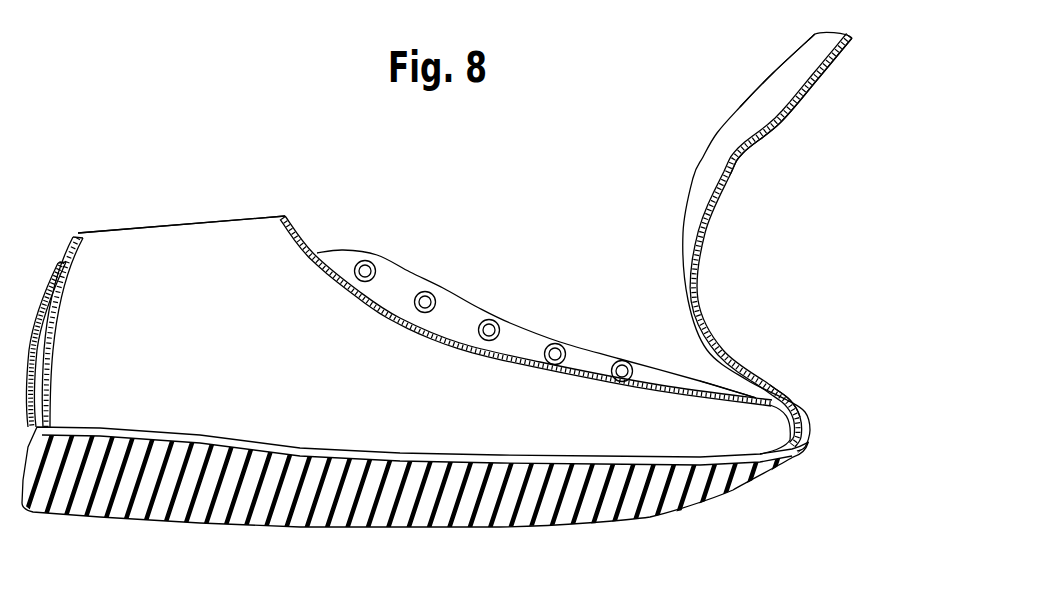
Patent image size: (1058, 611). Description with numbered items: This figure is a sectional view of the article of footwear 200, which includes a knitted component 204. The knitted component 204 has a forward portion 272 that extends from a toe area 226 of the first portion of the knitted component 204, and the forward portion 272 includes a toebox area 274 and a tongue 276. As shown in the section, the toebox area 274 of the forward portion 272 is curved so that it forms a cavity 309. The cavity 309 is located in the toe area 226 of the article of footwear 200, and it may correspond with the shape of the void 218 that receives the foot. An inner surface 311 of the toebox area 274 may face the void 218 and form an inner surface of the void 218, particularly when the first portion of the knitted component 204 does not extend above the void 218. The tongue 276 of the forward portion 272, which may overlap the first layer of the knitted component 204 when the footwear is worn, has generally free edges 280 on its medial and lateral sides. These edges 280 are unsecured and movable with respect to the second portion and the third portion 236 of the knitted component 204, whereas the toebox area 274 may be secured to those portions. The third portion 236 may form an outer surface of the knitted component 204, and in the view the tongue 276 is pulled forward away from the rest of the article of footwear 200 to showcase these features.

The article of footwear 200 is at (268, 163).
The knitted component 204 is at (60, 262).
The void 218 is at (229, 326).
The toe area 226 is at (813, 429).
The third portion 236 is at (392, 274).
The forward portion 272 is at (702, 264).
The toebox area 274 is at (797, 410).
The tongue 276 is at (768, 134).
The edges 280 is at (771, 74).
The cavity 309 is at (785, 422).
The inner surface 311 is at (767, 403).